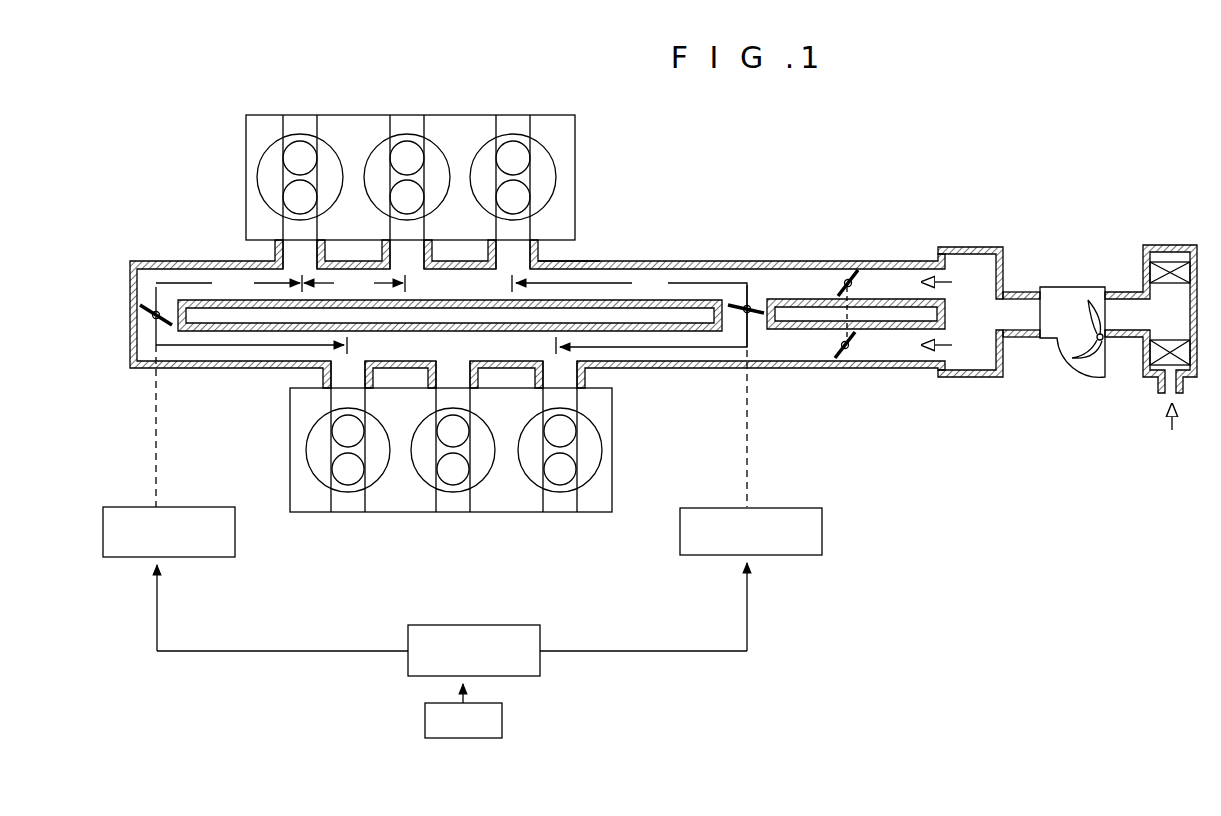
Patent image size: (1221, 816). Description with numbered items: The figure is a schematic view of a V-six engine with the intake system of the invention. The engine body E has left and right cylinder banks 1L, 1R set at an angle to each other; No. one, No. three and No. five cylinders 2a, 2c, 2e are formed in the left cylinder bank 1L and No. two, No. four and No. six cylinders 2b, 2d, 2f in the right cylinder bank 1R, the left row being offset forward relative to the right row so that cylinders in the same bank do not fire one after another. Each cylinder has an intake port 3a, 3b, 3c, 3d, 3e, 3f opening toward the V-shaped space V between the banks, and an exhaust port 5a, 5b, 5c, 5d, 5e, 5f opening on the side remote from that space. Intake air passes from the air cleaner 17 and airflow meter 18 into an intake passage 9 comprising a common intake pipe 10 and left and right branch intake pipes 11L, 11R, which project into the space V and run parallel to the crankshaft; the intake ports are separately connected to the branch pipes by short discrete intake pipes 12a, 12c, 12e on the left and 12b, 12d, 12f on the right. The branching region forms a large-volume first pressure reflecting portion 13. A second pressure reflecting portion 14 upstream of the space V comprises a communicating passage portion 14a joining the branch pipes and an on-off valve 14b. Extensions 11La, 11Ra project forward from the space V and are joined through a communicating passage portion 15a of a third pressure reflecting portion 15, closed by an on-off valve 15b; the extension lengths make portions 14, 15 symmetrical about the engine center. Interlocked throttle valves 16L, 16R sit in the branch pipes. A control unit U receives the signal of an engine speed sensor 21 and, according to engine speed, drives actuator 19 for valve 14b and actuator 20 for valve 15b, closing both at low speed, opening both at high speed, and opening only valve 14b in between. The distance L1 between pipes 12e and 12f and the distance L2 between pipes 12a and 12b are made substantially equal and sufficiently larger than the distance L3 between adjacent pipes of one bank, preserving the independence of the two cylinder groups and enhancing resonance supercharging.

The left cylinder bank 1L is at (243, 172).
The right cylinder bank 1R is at (287, 462).
The No. 1 cylinder 2a is at (332, 170).
The No. 2 cylinder 2b is at (313, 443).
The No. 3 cylinder 2c is at (439, 168).
The No. 4 cylinder 2d is at (481, 440).
The No. 5 cylinder 2e is at (540, 170).
The No. 6 cylinder 2f is at (587, 445).
The intake port 3a is at (293, 229).
The intake port 3b is at (327, 398).
The intake port 3c is at (417, 226).
The intake port 3d is at (435, 400).
The intake port 3e is at (523, 228).
The intake port 3f is at (570, 400).
The exhaust port 5a is at (308, 120).
The exhaust port 5b is at (352, 504).
The exhaust port 5c is at (412, 120).
The exhaust port 5d is at (457, 504).
The exhaust port 5e is at (519, 120).
The exhaust port 5f is at (562, 503).
The intake passage 9 is at (803, 259).
The common intake pipe 10 is at (1029, 337).
The left branch intake pipe 11L is at (735, 261).
The extension of left branch intake pipe 11La is at (190, 261).
The right branch intake pipe 11R is at (716, 368).
The extension of right branch intake pipe 11Ra is at (363, 386).
The discrete intake pipe 12a is at (307, 257).
The discrete intake pipe 12b is at (328, 375).
The discrete intake pipe 12c is at (408, 254).
The discrete intake pipe 12d is at (428, 373).
The discrete intake pipe 12e is at (500, 258).
The discrete intake pipe 12f is at (532, 374).
The first pressure reflecting portion 13 is at (972, 378).
The second pressure reflecting portion 14 is at (758, 337).
The communicating passage portion 14a is at (758, 324).
The on-off valve 14b is at (753, 302).
The third pressure reflecting portion 15 is at (123, 360).
The communicating passage portion 15a is at (141, 319).
The on-off valve 15b is at (142, 303).
The throttle valve 16L is at (853, 282).
The throttle valve 16R is at (848, 345).
The air cleaner 17 is at (1150, 271).
The airflow meter 18 is at (1081, 378).
The actuator 19 is at (803, 556).
The actuator 20 is at (183, 559).
The engine speed sensor 21 is at (504, 722).
The engine body E is at (606, 182).
The V-shaped space V is at (556, 257).
The control unit U is at (543, 661).
The distance L1 is at (629, 312).
The distance L2 is at (229, 283).
The distance L3 is at (354, 283).